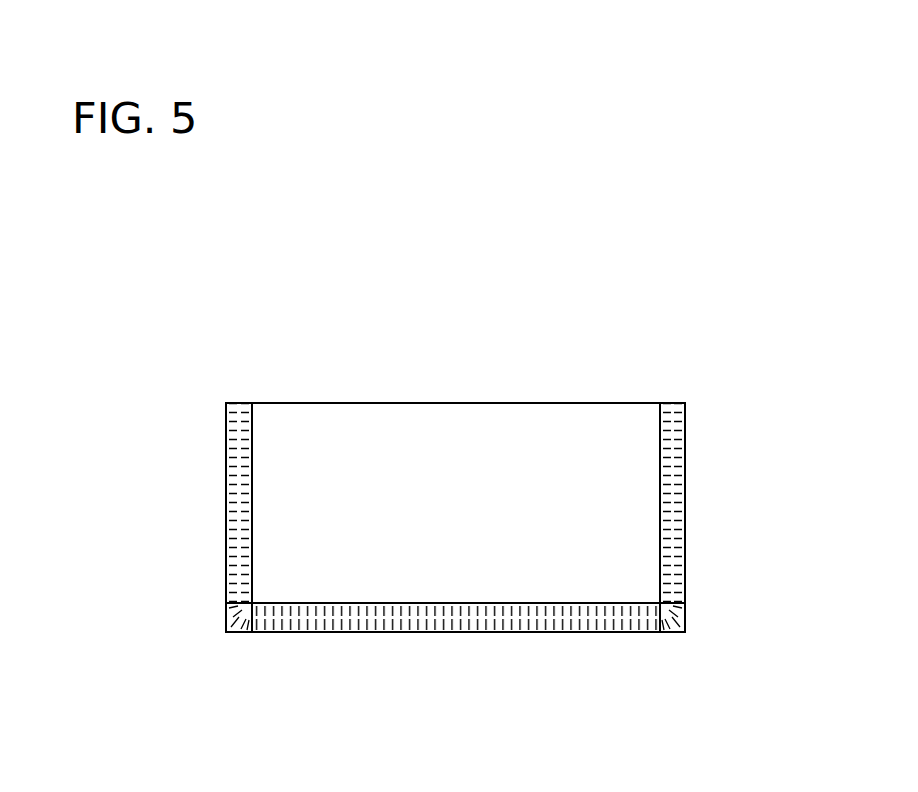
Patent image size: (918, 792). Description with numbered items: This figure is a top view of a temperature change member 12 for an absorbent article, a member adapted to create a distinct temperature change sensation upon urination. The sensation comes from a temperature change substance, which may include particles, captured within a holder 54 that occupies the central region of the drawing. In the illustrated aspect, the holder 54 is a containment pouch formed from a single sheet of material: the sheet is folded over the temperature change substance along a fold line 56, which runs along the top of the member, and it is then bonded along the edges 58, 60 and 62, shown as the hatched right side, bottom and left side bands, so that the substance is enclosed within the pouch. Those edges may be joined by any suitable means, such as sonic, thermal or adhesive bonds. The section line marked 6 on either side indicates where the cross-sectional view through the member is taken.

The temperature change member 12 is at (288, 369).
The holder 54 is at (326, 586).
The fold line 56 is at (517, 403).
The edge 58 is at (685, 460).
The edge 60 is at (440, 632).
The edge 62 is at (233, 452).
The section line 6- 6 is at (223, 519).